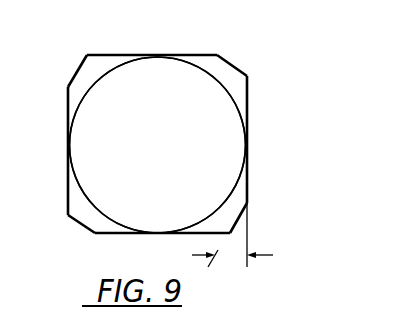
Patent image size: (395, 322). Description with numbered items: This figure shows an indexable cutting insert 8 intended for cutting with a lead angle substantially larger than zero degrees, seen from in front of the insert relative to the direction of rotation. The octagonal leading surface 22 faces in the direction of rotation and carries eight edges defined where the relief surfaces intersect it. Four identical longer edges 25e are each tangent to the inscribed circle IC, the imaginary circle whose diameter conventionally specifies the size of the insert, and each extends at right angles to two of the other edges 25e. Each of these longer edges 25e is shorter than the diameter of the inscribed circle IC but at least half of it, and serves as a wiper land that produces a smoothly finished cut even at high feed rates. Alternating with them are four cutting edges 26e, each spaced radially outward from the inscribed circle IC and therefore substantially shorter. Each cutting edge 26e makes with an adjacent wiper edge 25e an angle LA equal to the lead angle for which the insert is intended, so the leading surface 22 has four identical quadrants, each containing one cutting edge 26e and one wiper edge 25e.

The bar stock with chamfered corners 8 is at (171, 139).
The leading surface 22 is at (166, 178).
The wiper edge 25e is at (68, 118).
The cutting edge 26e is at (83, 60).
The inscribed circle IC is at (113, 70).
The lead angle LA is at (232, 235).